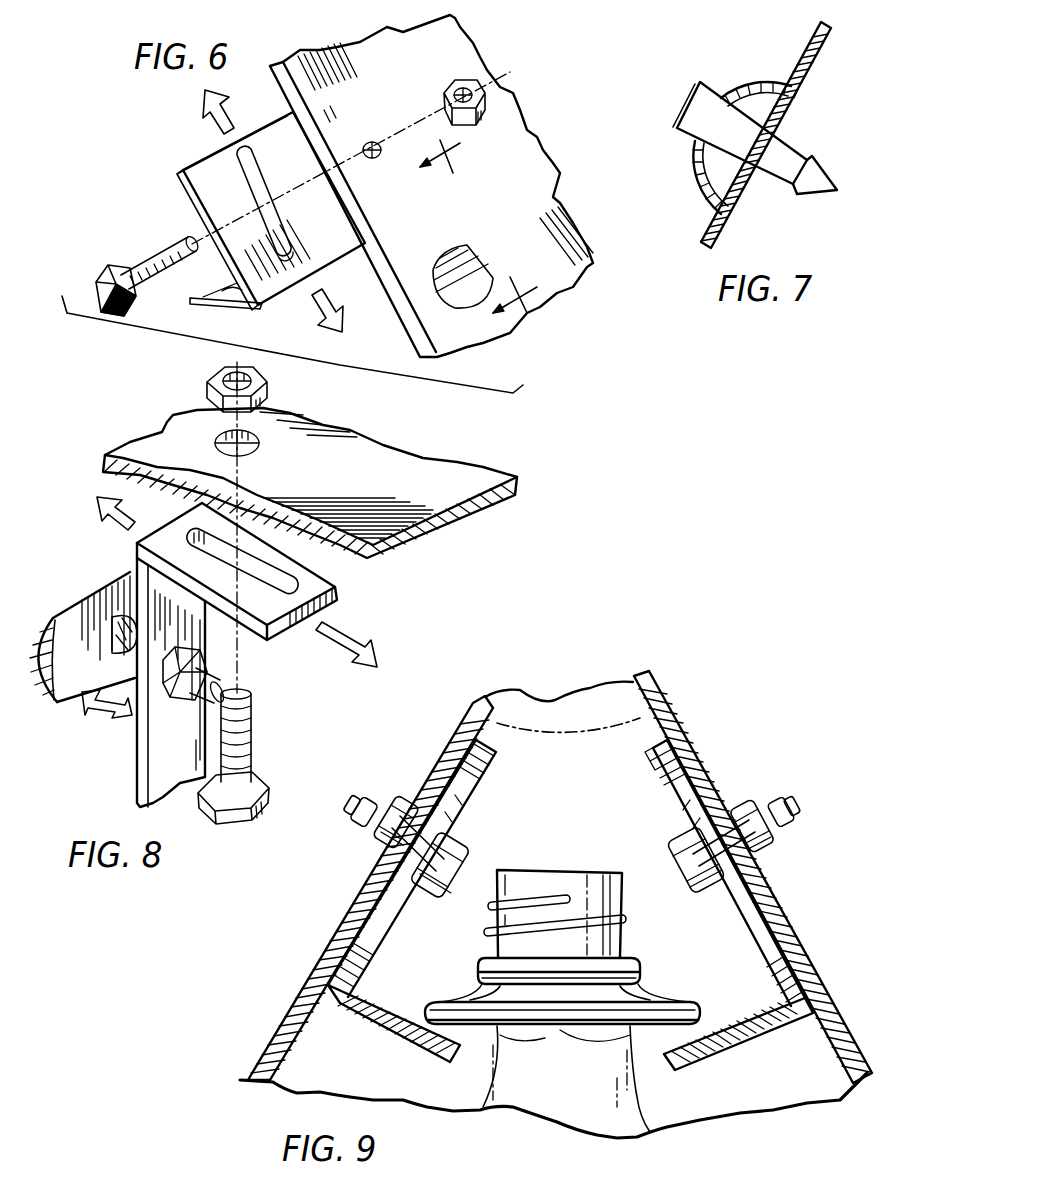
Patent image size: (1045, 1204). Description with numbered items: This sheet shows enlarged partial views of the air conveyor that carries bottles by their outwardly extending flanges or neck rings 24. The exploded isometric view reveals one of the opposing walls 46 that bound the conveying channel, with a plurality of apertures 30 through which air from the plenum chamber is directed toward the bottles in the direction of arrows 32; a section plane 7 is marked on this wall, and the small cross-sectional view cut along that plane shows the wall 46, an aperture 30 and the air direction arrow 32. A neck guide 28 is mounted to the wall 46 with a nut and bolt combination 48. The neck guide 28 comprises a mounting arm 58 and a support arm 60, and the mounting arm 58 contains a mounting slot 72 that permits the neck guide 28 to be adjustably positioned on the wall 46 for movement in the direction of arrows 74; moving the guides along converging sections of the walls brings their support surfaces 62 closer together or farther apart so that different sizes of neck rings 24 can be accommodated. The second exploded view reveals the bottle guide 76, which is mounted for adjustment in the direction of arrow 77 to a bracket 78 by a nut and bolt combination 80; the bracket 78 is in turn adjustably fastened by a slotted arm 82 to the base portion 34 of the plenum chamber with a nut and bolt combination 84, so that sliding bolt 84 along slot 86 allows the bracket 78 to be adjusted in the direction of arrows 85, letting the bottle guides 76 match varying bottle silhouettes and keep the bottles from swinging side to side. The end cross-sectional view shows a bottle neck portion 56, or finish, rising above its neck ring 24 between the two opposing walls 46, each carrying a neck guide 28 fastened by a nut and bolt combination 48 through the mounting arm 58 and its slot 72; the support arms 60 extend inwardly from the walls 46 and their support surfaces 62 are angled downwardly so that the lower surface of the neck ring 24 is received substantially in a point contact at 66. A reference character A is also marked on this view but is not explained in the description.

In FIG. 6, the section plane 7— 7 is at (483, 222).
In FIG. 9, the neck ring 24 is at (688, 1003).
In FIG. 6, the neck guide 28 is at (185, 190).
In FIG. 9, the neck guide 28 is at (648, 769).
In FIG. 6, the aperture 30 is at (470, 262).
In FIG. 7, the aperture 30 is at (704, 188).
In FIG. 7, the air direction arrow 32 is at (780, 153).
In FIG. 8, the base portion 34 is at (355, 488).
In FIG. 6, the wall 46 is at (512, 201).
In FIG. 7, the wall 46 is at (805, 60).
In FIG. 9, the wall 46 is at (443, 776).
In FIG. 6, the nut and bolt combination 48 is at (495, 110).
In FIG. 9, the nut and bolt combination 48 is at (358, 818).
In FIG. 9, the neck portion 56 is at (578, 882).
In FIG. 6, the mounting arm 58 is at (222, 187).
In FIG. 9, the mounting arm 58 is at (333, 938).
In FIG. 6, the support arm 60 is at (212, 307).
In FIG. 9, the support arm 60 is at (390, 1028).
In FIG. 6, the support surface 62 is at (207, 288).
In FIG. 9, the support surface 62 is at (363, 1006).
In FIG. 9, the point contact 66 is at (433, 1003).
In FIG. 6, the mounting slot 72 is at (257, 187).
In FIG. 9, the mounting slot 72 is at (388, 922).
In FIG. 6, the neck guide adjustment arrow 74 is at (226, 110).
In FIG. 8, the bottle guide 76 is at (52, 617).
In FIG. 8, the bottle guide adjustment arrow 77 is at (95, 713).
In FIG. 8, the bracket 78 is at (182, 765).
In FIG. 8, the nut and bolt combination 80 is at (187, 648).
In FIG. 8, the slotted arm 82 is at (287, 606).
In FIG. 8, the nut and bolt combination 84 is at (266, 400).
In FIG. 8, the bracket adjustment arrow 85 is at (112, 518).
In FIG. 8, the slot 86 is at (293, 573).
In FIG. 9, the axis A is at (557, 733).